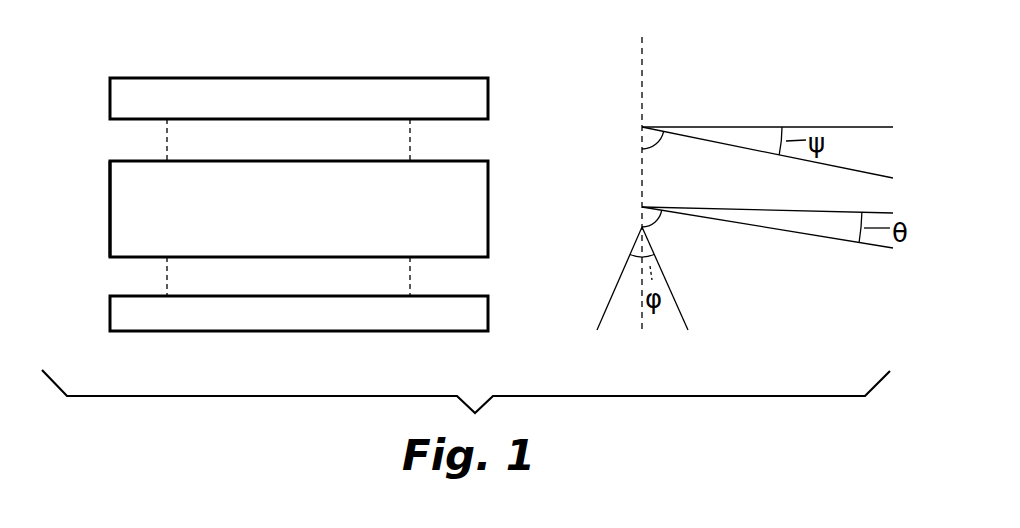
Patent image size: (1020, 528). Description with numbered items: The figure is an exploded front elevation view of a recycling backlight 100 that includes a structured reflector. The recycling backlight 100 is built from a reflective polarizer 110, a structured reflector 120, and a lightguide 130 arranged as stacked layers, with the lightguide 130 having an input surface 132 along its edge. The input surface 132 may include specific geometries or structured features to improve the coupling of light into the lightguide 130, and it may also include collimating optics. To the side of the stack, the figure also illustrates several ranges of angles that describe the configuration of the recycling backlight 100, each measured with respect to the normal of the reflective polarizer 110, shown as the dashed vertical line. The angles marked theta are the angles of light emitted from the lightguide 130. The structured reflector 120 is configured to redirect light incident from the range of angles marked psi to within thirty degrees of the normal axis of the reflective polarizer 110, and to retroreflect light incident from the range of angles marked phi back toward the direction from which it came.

The recycling backlight 100 is at (458, 55).
The reflective polarizer 110 is at (477, 100).
The structured reflector 120 is at (477, 316).
The lightguide 130 is at (477, 214).
The input surface 132 is at (110, 202).